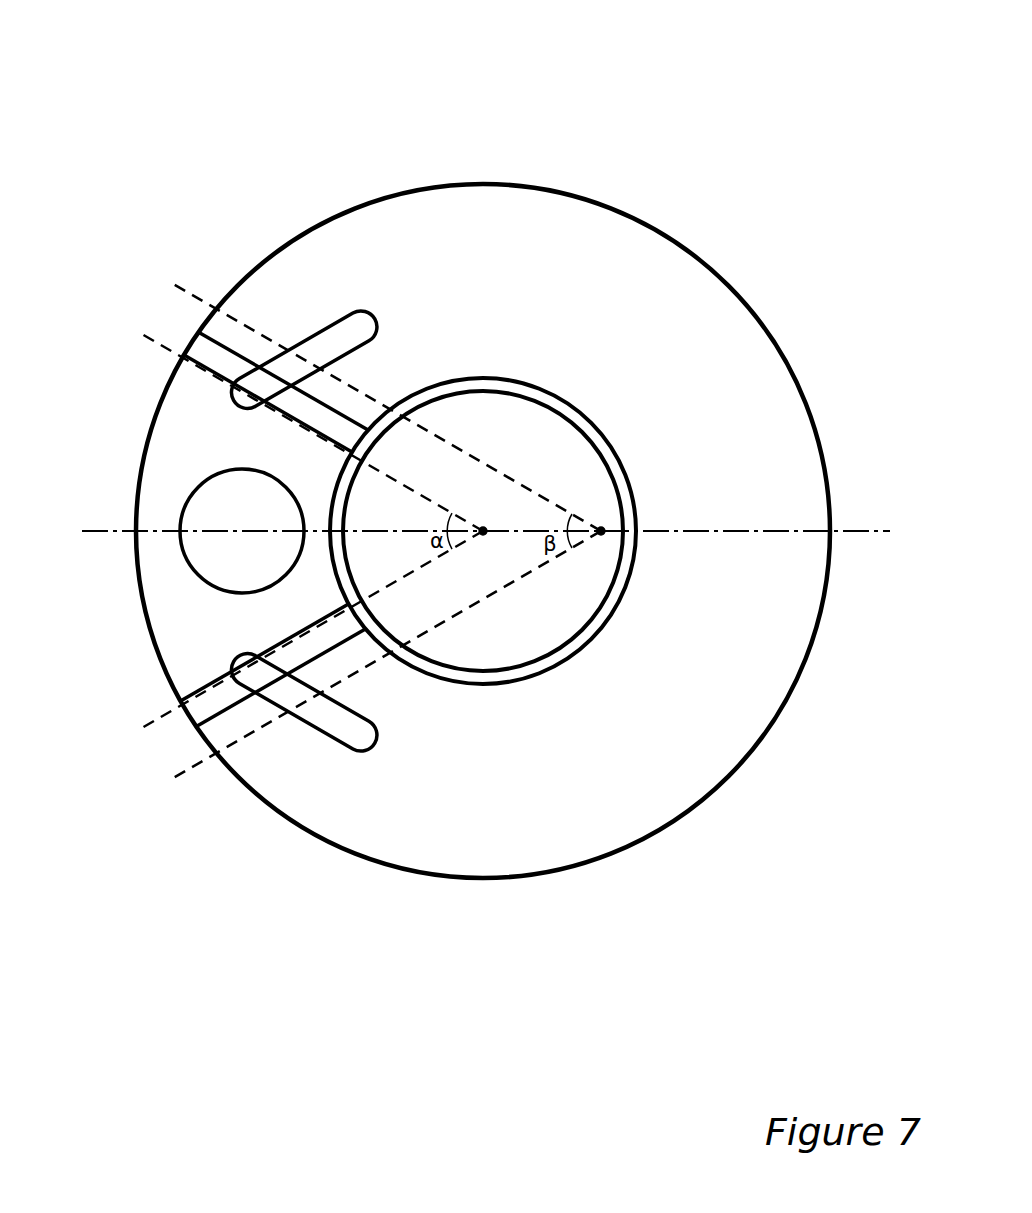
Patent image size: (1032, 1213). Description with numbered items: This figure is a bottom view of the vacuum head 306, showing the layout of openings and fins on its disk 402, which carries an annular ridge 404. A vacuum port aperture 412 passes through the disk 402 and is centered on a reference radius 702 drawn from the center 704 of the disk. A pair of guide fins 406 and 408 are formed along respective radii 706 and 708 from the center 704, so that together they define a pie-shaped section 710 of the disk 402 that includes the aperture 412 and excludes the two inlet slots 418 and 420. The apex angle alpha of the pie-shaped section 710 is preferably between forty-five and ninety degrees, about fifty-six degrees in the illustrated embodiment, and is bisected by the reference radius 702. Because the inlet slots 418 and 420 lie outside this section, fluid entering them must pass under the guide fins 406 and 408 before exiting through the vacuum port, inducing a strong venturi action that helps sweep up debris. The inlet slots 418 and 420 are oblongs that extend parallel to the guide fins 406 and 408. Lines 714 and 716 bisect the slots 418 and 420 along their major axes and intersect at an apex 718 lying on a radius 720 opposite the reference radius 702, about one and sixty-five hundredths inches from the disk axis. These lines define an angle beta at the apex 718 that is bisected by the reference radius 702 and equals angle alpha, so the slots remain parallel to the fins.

The vacuum head 306 is at (258, 119).
The disk 402 is at (511, 277).
The annular ridge 404 is at (609, 430).
The guide fin 406 is at (263, 403).
The guide fin 408 is at (247, 660).
The vacuum port aperture 412 is at (231, 484).
The inlet slot 418 is at (307, 334).
The inlet slot 420 is at (295, 730).
The reference radius 702 is at (117, 528).
The center 704 is at (484, 527).
The radius 706 is at (152, 340).
The radius 708 is at (150, 712).
The pie-shaped section 710 is at (158, 598).
The line 714 is at (183, 290).
The line 716 is at (197, 763).
The apex 718 is at (602, 527).
The radius 720 is at (862, 531).